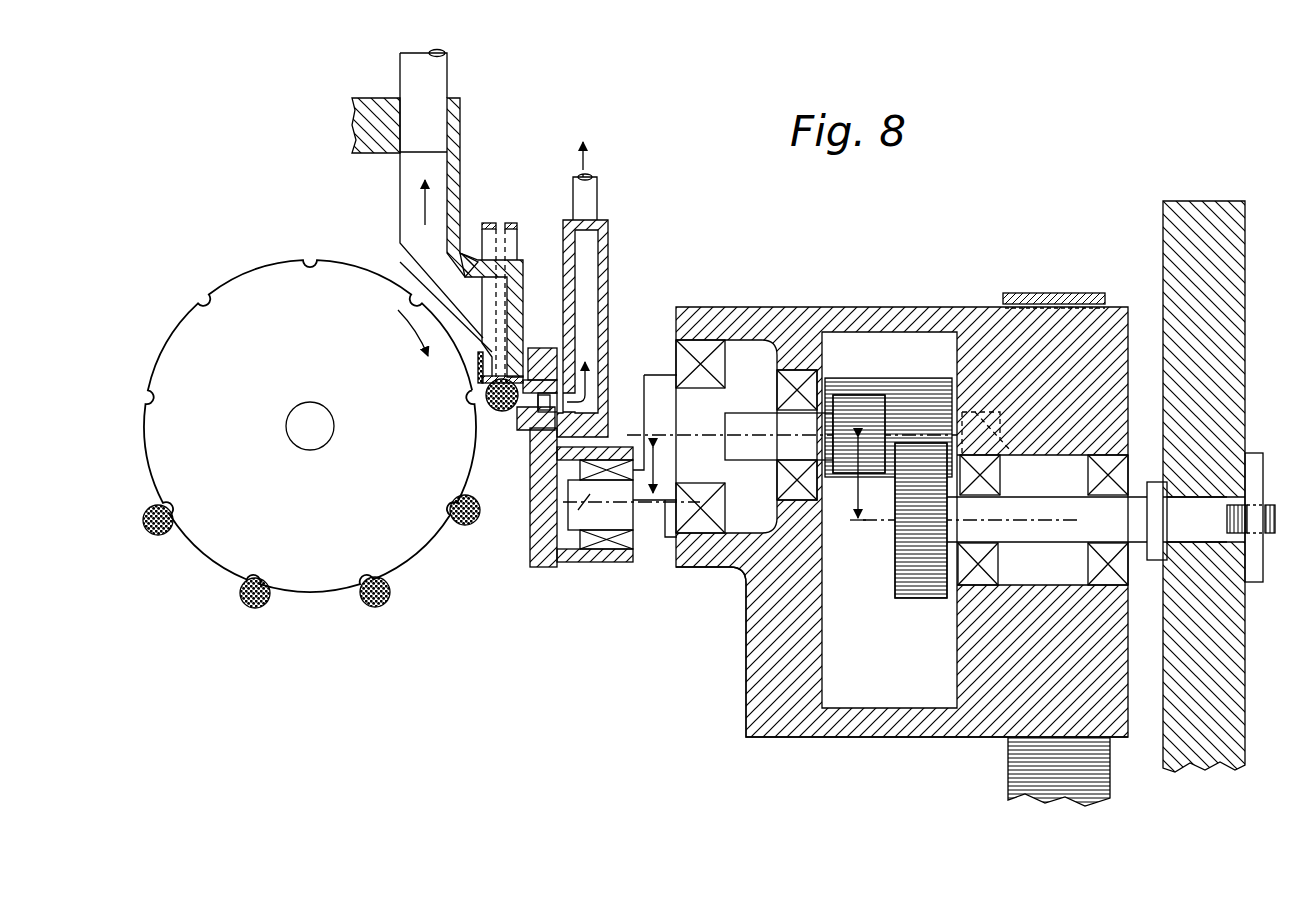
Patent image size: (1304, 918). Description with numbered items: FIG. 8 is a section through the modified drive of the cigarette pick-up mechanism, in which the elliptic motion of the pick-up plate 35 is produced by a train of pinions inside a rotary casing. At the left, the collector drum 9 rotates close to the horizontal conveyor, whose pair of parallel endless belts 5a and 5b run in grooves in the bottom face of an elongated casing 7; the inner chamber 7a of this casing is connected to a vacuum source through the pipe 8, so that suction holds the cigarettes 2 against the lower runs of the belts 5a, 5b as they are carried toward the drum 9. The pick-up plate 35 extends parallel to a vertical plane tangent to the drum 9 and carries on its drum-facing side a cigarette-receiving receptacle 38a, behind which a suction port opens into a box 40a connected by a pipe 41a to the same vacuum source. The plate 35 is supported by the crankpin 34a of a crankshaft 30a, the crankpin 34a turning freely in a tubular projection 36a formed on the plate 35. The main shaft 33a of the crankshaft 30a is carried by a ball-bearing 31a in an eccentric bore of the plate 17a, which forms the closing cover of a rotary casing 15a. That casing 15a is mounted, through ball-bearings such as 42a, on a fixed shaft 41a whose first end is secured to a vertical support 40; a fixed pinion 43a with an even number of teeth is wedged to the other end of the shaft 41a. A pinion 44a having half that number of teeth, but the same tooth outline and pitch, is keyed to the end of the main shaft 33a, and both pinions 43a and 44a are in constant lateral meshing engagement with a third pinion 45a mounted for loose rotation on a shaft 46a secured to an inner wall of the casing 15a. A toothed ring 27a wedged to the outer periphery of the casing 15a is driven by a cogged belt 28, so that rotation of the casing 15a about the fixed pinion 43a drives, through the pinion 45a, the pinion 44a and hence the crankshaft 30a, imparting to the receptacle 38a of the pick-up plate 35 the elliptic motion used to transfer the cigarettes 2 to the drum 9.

The cigarette 2 is at (500, 412).
The endless belt 5a is at (505, 378).
The endless belt 5b is at (481, 376).
The feed block 7 is at (518, 272).
The elongated inner chamber 7a is at (490, 300).
The pipe 8 is at (435, 93).
The collector drum 9 is at (340, 596).
The rotary casing 15a is at (797, 330).
The front circular plate 17a is at (788, 650).
The toothed ring 27a is at (1005, 303).
The cogged belt 28 is at (1010, 770).
The crankshaft 30a is at (651, 543).
The ball-bearing 31a is at (716, 376).
The main shaft 33a is at (771, 448).
The crankpin 34a is at (605, 520).
The pick-up plate 35 is at (543, 568).
The tubular projection 36a is at (613, 447).
The cigarette-receiving receptacle 38a is at (523, 432).
The vertical support 40 is at (1204, 337).
The box 40a is at (588, 300).
The fixed shaft 41a is at (587, 203).
The ball-bearing 42a is at (1093, 567).
The fixed pinion 43a is at (922, 584).
The pinion 44a is at (862, 395).
The third pinion 45a is at (923, 390).
The shaft 46a is at (1000, 455).